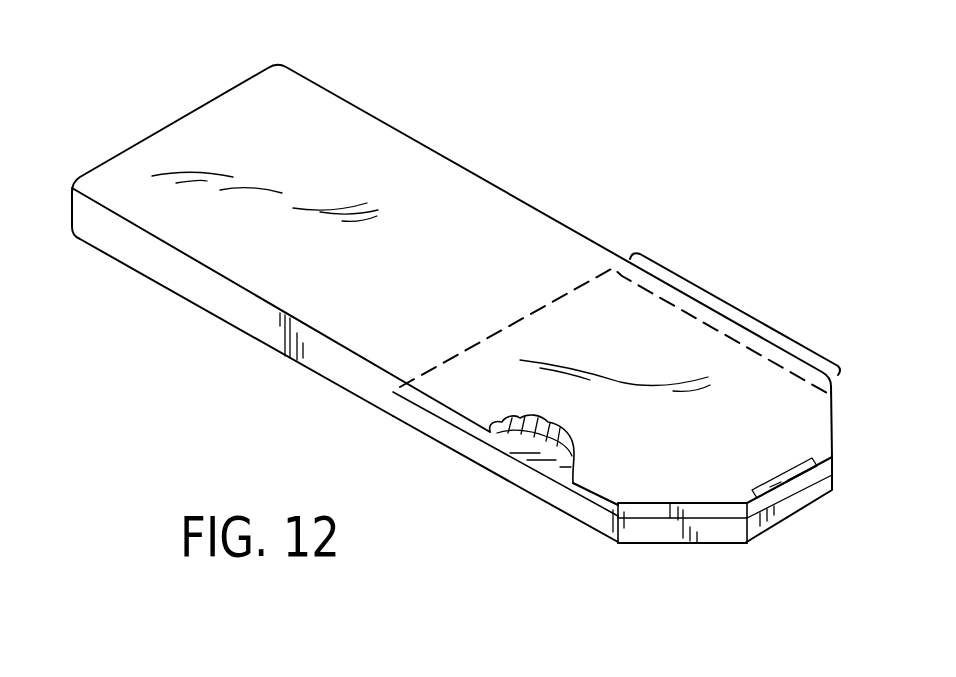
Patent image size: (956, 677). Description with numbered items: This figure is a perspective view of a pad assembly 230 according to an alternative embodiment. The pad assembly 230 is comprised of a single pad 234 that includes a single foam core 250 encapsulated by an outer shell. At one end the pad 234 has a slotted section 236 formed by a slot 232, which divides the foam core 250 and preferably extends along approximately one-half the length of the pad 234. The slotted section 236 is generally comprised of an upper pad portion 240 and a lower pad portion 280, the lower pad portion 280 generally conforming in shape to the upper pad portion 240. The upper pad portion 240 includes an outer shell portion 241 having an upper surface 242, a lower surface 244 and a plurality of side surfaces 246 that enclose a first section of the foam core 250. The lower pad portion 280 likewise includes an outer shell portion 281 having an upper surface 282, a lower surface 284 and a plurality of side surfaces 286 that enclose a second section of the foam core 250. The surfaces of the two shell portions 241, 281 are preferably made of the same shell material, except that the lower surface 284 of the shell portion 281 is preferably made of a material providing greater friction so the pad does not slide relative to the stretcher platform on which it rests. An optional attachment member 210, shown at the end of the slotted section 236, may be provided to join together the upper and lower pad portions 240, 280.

The pad assembly 230 is at (160, 89).
The pad 234 is at (452, 195).
The upper surface 242 is at (632, 315).
The slotted section 236 is at (748, 310).
The upper pad portion 240 is at (740, 359).
The outer shell portion 241 is at (427, 403).
The lower surface 244 is at (440, 422).
The slot 232 is at (462, 433).
The foam core 250 is at (513, 450).
The upper surface 282 is at (537, 467).
The outer shell portion 281 is at (562, 502).
The lower pad portion 280 is at (570, 537).
The lower surface 284 is at (603, 535).
The side surfaces 286 is at (662, 533).
The side surfaces 246 is at (715, 515).
The attachment member 210 is at (803, 499).